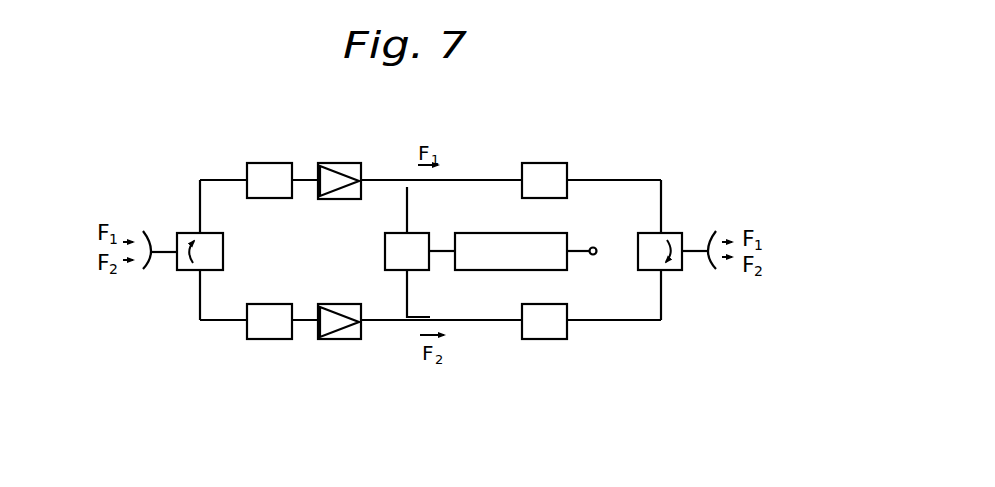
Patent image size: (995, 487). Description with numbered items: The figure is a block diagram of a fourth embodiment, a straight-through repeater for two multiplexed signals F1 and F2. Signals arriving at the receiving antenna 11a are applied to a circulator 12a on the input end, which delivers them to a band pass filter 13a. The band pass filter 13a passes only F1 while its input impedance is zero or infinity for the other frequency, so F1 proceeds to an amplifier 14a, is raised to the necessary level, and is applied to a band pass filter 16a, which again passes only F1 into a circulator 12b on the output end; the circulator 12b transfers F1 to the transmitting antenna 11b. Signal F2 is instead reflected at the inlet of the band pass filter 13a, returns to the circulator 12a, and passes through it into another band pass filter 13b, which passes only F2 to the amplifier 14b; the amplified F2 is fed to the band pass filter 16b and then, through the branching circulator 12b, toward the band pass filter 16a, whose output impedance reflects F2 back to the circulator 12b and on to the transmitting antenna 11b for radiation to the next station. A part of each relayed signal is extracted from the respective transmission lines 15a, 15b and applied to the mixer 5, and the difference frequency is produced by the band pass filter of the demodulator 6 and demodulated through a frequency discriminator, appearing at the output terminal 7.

The mixer 5 is at (385, 258).
The demodulator 6 is at (508, 233).
The output terminal 7 is at (591, 250).
The receiving antenna 11a is at (147, 272).
The transmitting antenna 11b is at (711, 272).
The circulator 12a is at (188, 233).
The circulator 12b is at (678, 233).
The band pass filter 13a is at (275, 163).
The band pass filter 13b is at (275, 340).
The amplifier 14a is at (348, 163).
The amplifier 14b is at (345, 340).
The coupling line 15a is at (407, 187).
The coupling line 15b is at (430, 317).
The band pass filter 16a is at (547, 163).
The band pass filter 16b is at (552, 340).